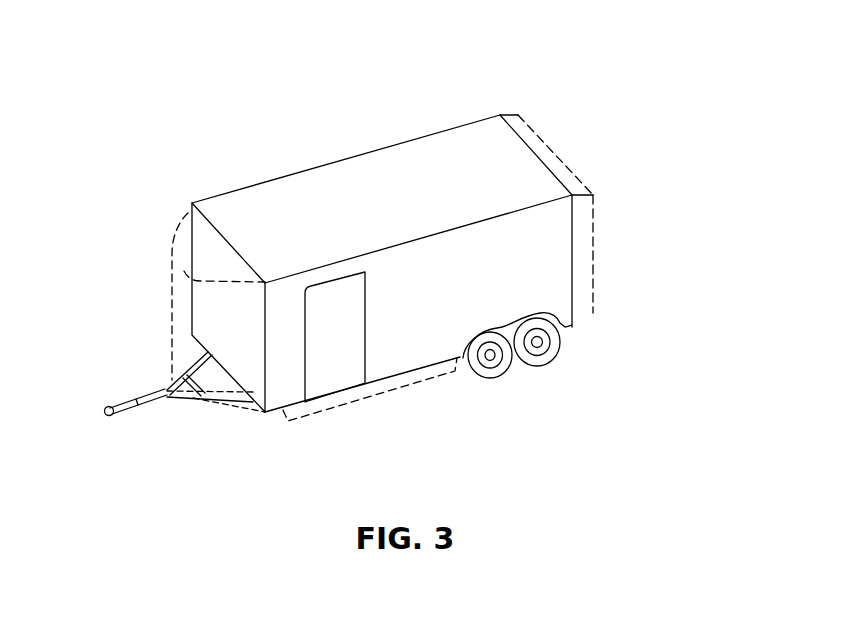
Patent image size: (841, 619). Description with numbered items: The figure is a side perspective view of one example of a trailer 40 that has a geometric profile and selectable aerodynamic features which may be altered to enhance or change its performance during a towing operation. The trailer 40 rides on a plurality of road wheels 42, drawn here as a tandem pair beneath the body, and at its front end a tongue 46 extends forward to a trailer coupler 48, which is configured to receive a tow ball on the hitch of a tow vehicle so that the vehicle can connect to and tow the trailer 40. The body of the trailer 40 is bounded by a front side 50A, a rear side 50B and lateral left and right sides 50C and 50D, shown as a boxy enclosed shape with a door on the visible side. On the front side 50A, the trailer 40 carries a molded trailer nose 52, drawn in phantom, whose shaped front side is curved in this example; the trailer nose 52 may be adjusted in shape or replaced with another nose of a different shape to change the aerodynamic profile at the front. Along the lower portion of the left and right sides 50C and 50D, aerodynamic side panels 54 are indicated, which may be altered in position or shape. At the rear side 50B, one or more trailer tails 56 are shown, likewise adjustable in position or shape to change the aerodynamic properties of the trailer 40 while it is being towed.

The trailer 40 is at (472, 96).
The road wheels 42 is at (496, 370).
The tongue 46 is at (167, 392).
The trailer coupler 48 is at (108, 408).
The front side 50A is at (208, 298).
The rear side 50B is at (572, 175).
The lateral left side 50C is at (403, 345).
The lateral right side 50D is at (333, 163).
The molded trailer nose 52 is at (182, 232).
The aerodynamic side panels 54 is at (308, 415).
The trailer tails 56 is at (594, 250).